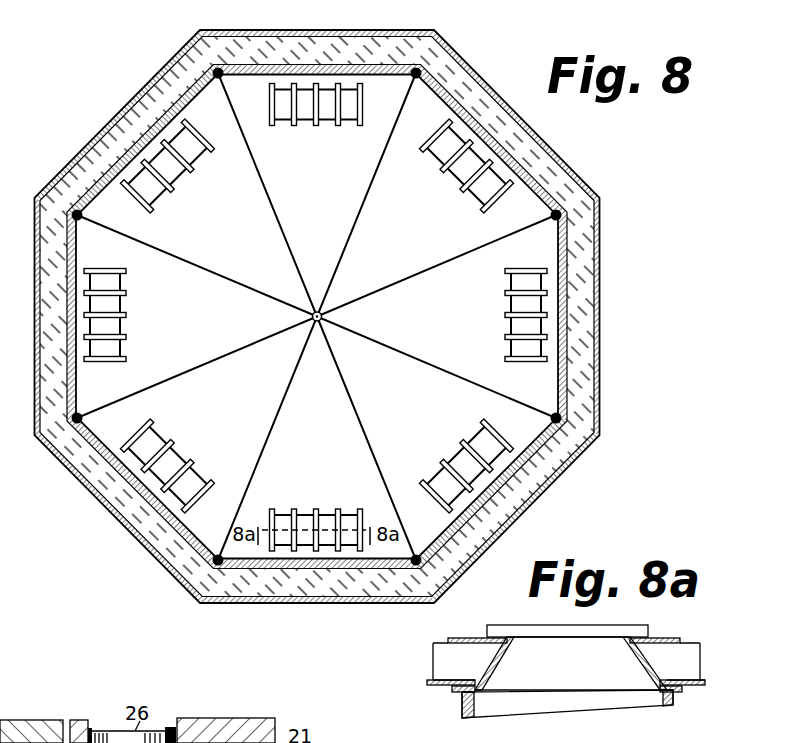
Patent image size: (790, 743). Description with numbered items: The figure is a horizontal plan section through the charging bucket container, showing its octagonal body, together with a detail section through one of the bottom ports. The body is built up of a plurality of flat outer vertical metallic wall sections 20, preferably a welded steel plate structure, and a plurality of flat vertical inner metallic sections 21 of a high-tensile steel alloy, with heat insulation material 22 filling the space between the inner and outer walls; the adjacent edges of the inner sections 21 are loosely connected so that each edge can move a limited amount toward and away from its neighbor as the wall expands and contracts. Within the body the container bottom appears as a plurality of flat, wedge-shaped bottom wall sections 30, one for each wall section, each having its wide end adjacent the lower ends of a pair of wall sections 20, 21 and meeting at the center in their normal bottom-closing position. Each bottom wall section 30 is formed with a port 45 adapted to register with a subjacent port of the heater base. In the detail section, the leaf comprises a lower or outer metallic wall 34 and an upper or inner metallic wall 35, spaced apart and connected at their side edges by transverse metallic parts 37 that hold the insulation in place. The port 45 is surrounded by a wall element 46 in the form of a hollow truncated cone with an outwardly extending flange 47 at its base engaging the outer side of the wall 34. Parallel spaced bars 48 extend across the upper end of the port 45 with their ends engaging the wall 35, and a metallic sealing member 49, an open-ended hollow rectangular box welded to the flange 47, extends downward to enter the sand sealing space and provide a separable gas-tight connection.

In FIG. 8, the outer vertical metallic wall section 20 is at (600, 262).
In FIG. 8, the inner metallic wall section 21 is at (561, 244).
In FIG. 8, the heat insulation material 22 is at (583, 355).
In FIG. 8, the bottom wall section 30 is at (325, 249).
In FIG. 8, the port 45 is at (305, 116).
In FIG. 8A, the port 45 is at (550, 647).
In FIG. 8A, the lower metallic wall 34 is at (430, 685).
In FIG. 8A, the upper metallic wall 35 is at (448, 639).
In FIG. 8A, the edge section 37 is at (460, 655).
In FIG. 8A, the wall element 46 is at (648, 670).
In FIG. 8A, the flange 47 is at (457, 691).
In FIG. 8A, the bar 48 is at (610, 632).
In FIG. 8A, the sealing member 49 is at (613, 713).